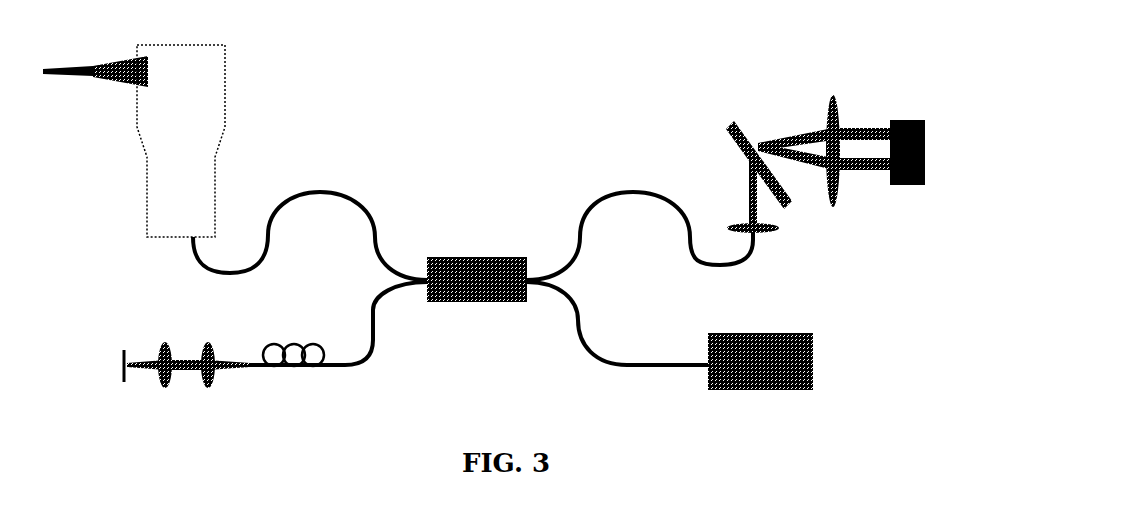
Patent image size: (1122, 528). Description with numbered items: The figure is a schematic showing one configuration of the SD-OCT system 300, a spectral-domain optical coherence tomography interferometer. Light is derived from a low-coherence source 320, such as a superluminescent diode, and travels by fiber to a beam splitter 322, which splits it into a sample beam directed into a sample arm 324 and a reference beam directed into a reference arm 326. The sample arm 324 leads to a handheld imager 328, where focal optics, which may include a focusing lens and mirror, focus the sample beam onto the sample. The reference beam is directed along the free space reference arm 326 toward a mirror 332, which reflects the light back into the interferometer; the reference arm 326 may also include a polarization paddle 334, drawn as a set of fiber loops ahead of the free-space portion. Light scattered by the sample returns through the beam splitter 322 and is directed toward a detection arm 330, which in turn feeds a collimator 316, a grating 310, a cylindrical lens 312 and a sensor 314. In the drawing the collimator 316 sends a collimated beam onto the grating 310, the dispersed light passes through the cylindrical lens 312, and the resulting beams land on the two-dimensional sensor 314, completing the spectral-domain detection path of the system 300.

The SD-OCT system 300 is at (483, 83).
The grating 310 is at (745, 147).
The cylindrical lens 312 is at (828, 123).
The sensor 314 is at (922, 120).
The collimator 316 is at (757, 232).
The low-coherence source 320 is at (813, 385).
The beam splitter 322 is at (470, 267).
The sample arm 324 is at (332, 193).
The reference arm 326 is at (373, 342).
The handheld imager 328 is at (180, 141).
The detection arm 330 is at (627, 192).
The mirror 332 is at (122, 360).
The polarization paddle 334 is at (287, 345).